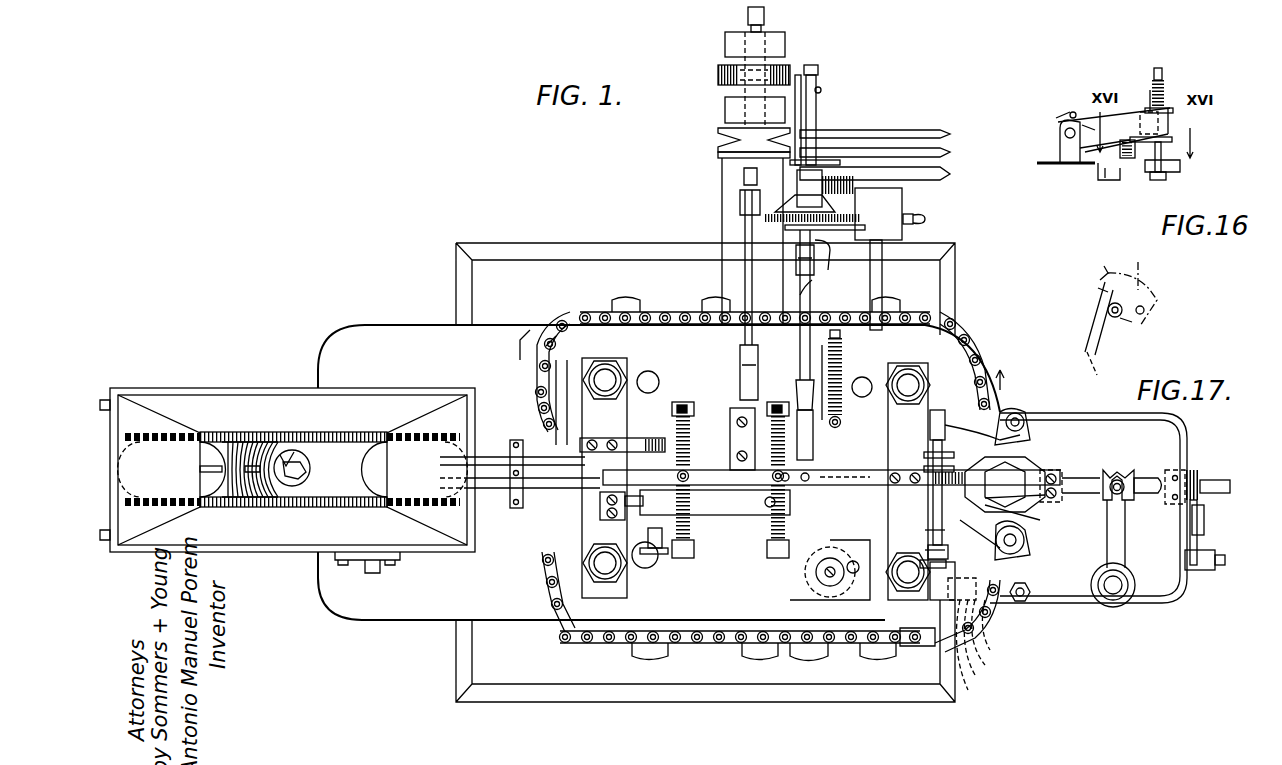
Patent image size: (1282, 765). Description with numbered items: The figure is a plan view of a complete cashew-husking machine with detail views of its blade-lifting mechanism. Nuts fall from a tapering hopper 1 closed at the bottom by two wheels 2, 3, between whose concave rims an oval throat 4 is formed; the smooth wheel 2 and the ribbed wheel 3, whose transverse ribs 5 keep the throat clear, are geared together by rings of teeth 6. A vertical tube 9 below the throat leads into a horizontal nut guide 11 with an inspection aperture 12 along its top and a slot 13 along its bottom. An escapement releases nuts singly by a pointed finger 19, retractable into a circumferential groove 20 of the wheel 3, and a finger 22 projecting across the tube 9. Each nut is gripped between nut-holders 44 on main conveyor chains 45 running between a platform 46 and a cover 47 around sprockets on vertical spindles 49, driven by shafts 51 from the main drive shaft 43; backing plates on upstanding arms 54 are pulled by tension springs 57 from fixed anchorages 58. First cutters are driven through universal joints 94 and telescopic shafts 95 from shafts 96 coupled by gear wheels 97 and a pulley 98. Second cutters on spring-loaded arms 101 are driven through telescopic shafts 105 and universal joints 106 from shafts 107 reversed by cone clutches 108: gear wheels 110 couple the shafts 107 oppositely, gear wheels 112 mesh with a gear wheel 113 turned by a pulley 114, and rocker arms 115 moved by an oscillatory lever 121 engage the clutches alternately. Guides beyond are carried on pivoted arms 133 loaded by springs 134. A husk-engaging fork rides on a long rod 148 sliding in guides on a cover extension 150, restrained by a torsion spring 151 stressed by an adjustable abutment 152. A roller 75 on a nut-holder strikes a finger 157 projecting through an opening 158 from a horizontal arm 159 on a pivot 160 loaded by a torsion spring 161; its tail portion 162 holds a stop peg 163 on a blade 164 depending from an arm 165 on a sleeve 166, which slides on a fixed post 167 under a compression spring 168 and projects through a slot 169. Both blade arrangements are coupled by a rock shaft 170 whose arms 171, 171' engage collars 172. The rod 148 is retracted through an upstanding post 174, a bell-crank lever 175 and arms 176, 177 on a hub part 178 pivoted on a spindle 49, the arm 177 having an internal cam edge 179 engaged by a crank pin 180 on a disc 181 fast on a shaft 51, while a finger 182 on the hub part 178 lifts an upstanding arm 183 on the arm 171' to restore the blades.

In FIG. 1, the hopper 1 is at (280, 552).
In FIG. 1, the wheel 2 is at (330, 486).
In FIG. 1, the wheel 3 is at (236, 440).
In FIG. 1, the oval throat 4 is at (286, 446).
In FIG. 1, the transverse ribs 5 is at (222, 488).
In FIG. 1, the rings of teeth 6 is at (215, 434).
In FIG. 1, the vertical tube 9 is at (300, 458).
In FIG. 1, the horizontal nut guide 11 is at (500, 455).
In FIG. 1, the inspection aperture 12 is at (517, 508).
In FIG. 1, the slot 13 is at (483, 492).
In FIG. 1, the pointed finger 19 is at (247, 460).
In FIG. 1, the circumferential groove 20 is at (240, 500).
In FIG. 1, the finger 22 is at (302, 470).
In FIG. 1, the main drive shaft 43 is at (882, 281).
In FIG. 1, the nut-holders 44 is at (665, 312).
In FIG. 1, the main conveyor chains 45 is at (580, 316).
In FIG. 1, the platform 46 is at (394, 612).
In FIG. 1, the cover 47 is at (540, 340).
In FIG. 1, the vertical spindles 49 is at (905, 592).
In FIG. 1, the shafts 51 is at (800, 652).
In FIG. 1, the upstanding arms 54 is at (683, 404).
In FIG. 1, the tension springs 57 is at (700, 540).
In FIG. 1, the fixed anchorages 58 is at (676, 470).
In FIG. 1, the roller 75 is at (976, 360).
In FIG. 16, the roller 75 is at (1110, 174).
In FIG. 1, the universal joints 94 is at (740, 166).
In FIG. 1, the telescopic shafts 95 is at (745, 212).
In FIG. 1, the shafts 96 is at (748, 14).
In FIG. 1, the gear wheels 97 is at (718, 78).
In FIG. 1, the pulley 98 is at (725, 128).
In FIG. 1, the spring-loaded arms 101 is at (712, 512).
In FIG. 1, the telescopic shafts 105 is at (814, 286).
In FIG. 1, the universal joints 106 is at (805, 260).
In FIG. 1, the shafts 107 is at (829, 255).
In FIG. 1, the cone clutches 108 is at (783, 200).
In FIG. 1, the gear wheels 110 is at (911, 212).
In FIG. 1, the gear wheels 112 is at (840, 168).
In FIG. 1, the gear wheel 113 is at (870, 184).
In FIG. 1, the pulley 114 is at (870, 148).
In FIG. 1, the rocker arm 115 is at (816, 70).
In FIG. 1, the oscillatory lever 121 is at (797, 75).
In FIG. 1, the transverse arms 133 is at (825, 412).
In FIG. 1, the springs 134 is at (843, 352).
In FIG. 1, the long rod 148 is at (1032, 478).
In FIG. 1, the cover extension 150 is at (1060, 413).
In FIG. 16, the cover extension 150 is at (1175, 165).
In FIG. 1, the torsion spring 151 is at (1178, 472).
In FIG. 1, the adjustable abutment 152 is at (1200, 535).
In FIG. 1, the finger 157 is at (966, 680).
In FIG. 16, the finger 157 is at (1100, 165).
In FIG. 17, the finger 157 is at (1096, 372).
In FIG. 1, the opening 158 is at (975, 652).
In FIG. 1, the horizontal arm 159 is at (985, 632).
In FIG. 17, the horizontal arm 159 is at (1125, 326).
In FIG. 1, the pivot 160 is at (1030, 556).
In FIG. 16, the pivot 160 is at (1128, 140).
In FIG. 17, the pivot 160 is at (1112, 332).
In FIG. 1, the torsion spring 161 is at (995, 602).
In FIG. 16, the torsion spring 161 is at (1165, 155).
In FIG. 17, the tail portion 162 is at (1100, 300).
In FIG. 1, the stop peg 163 is at (930, 476).
In FIG. 16, the stop peg 163 is at (1075, 150).
In FIG. 17, the stop peg 163 is at (1100, 290).
In FIG. 16, the blade 164 is at (1165, 175).
In FIG. 17, the blade 164 is at (1102, 278).
In FIG. 1, the arm 165 is at (1045, 496).
In FIG. 16, the arm 165 is at (1172, 140).
In FIG. 17, the arm 165 is at (1138, 285).
In FIG. 16, the sleeve 166 is at (1170, 118).
In FIG. 1, the fixed post 167 is at (1040, 520).
In FIG. 16, the fixed post 167 is at (1165, 72).
In FIG. 17, the fixed post 167 is at (1145, 310).
In FIG. 16, the compression spring 168 is at (1170, 88).
In FIG. 1, the slot 169 is at (1060, 476).
In FIG. 1, the rock shaft 170 is at (933, 460).
In FIG. 16, the rock shaft 170 is at (1065, 133).
In FIG. 1, the arm 171 is at (980, 424).
In FIG. 1, the arm 171' is at (915, 504).
In FIG. 16, the arm 171' is at (1080, 91).
In FIG. 1, the collars 172 is at (1024, 542).
In FIG. 16, the collars 172 is at (1145, 100).
In FIG. 1, the upstanding post 174 is at (1117, 468).
In FIG. 1, the bell-crank lever 175 is at (1122, 560).
In FIG. 1, the arm 176 is at (1022, 600).
In FIG. 1, the arm 177 is at (790, 600).
In FIG. 1, the hub part 178 is at (913, 646).
In FIG. 1, the internal cam edge 179 is at (790, 545).
In FIG. 1, the crank pin 180 is at (835, 590).
In FIG. 1, the disc 181 is at (820, 568).
In FIG. 1, the finger 182 is at (925, 550).
In FIG. 16, the finger 182 is at (1071, 112).
In FIG. 1, the upstanding arm 183 is at (925, 530).
In FIG. 16, the upstanding arm 183 is at (1062, 125).